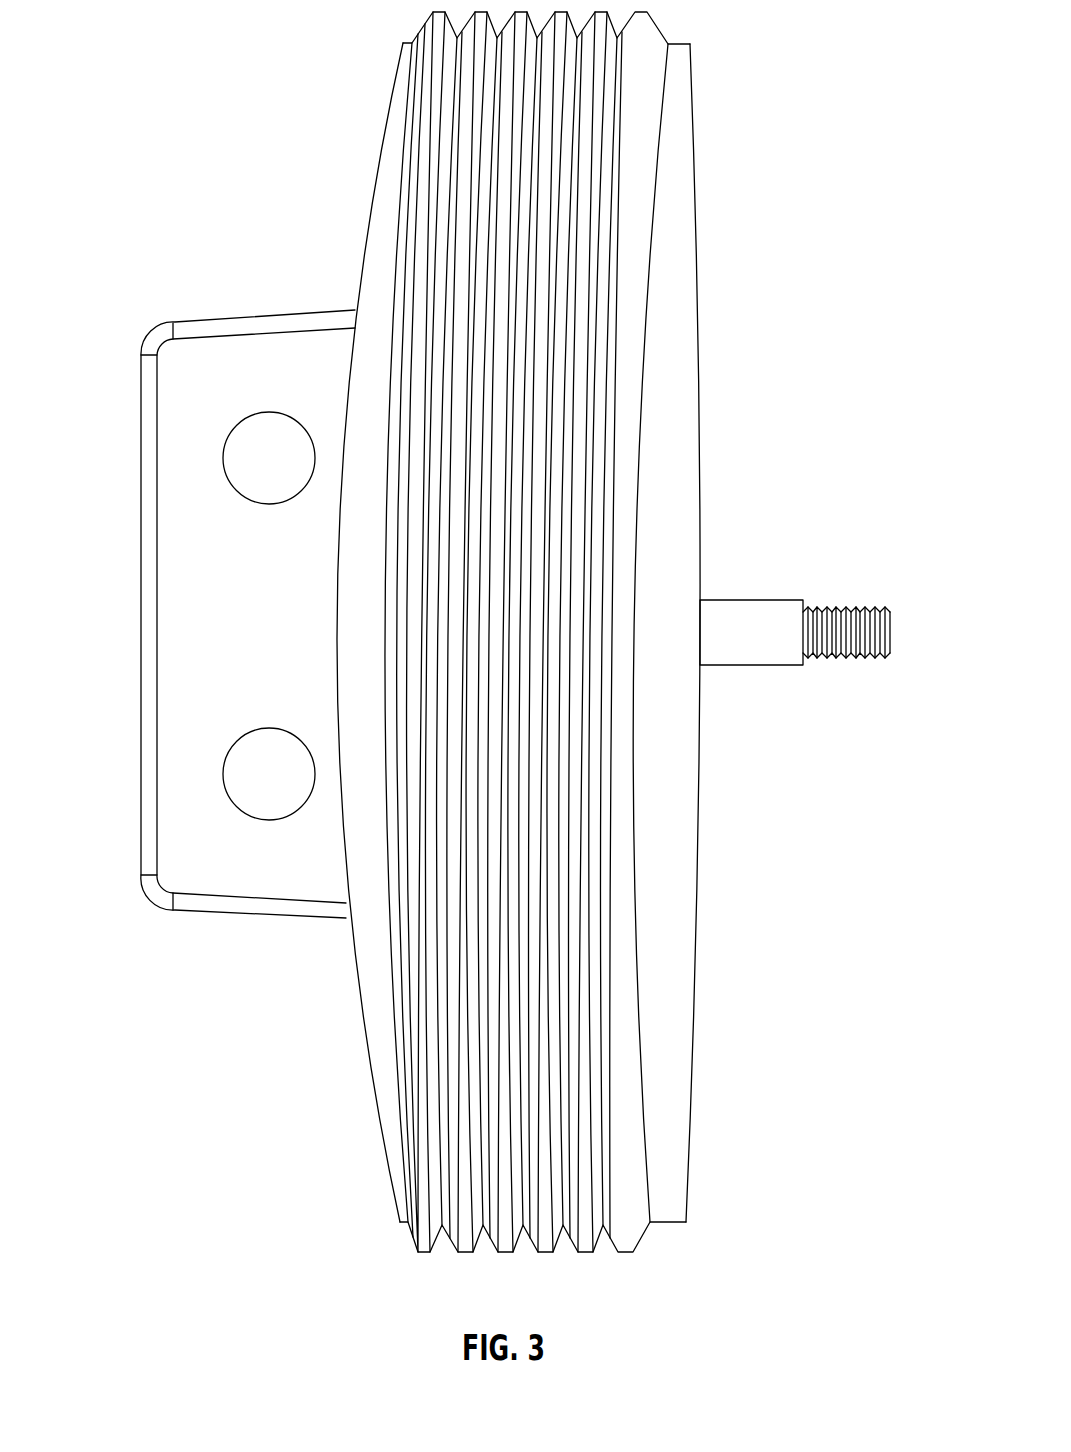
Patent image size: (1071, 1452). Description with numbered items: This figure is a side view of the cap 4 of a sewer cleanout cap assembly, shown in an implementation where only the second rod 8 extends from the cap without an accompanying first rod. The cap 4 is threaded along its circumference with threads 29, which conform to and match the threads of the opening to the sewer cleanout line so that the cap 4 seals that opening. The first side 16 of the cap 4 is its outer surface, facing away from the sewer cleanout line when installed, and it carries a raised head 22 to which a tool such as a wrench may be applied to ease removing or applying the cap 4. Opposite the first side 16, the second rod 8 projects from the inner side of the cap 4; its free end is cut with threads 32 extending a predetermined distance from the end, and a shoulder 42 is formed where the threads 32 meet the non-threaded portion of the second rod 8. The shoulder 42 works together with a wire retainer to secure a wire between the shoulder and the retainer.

The cap 4 is at (663, 67).
The second rod 8 is at (755, 600).
The first side 16 is at (353, 1006).
The raised head 22 is at (141, 605).
The threads 29 is at (483, 1112).
The threads 32 is at (866, 655).
The shoulder 42 is at (808, 603).